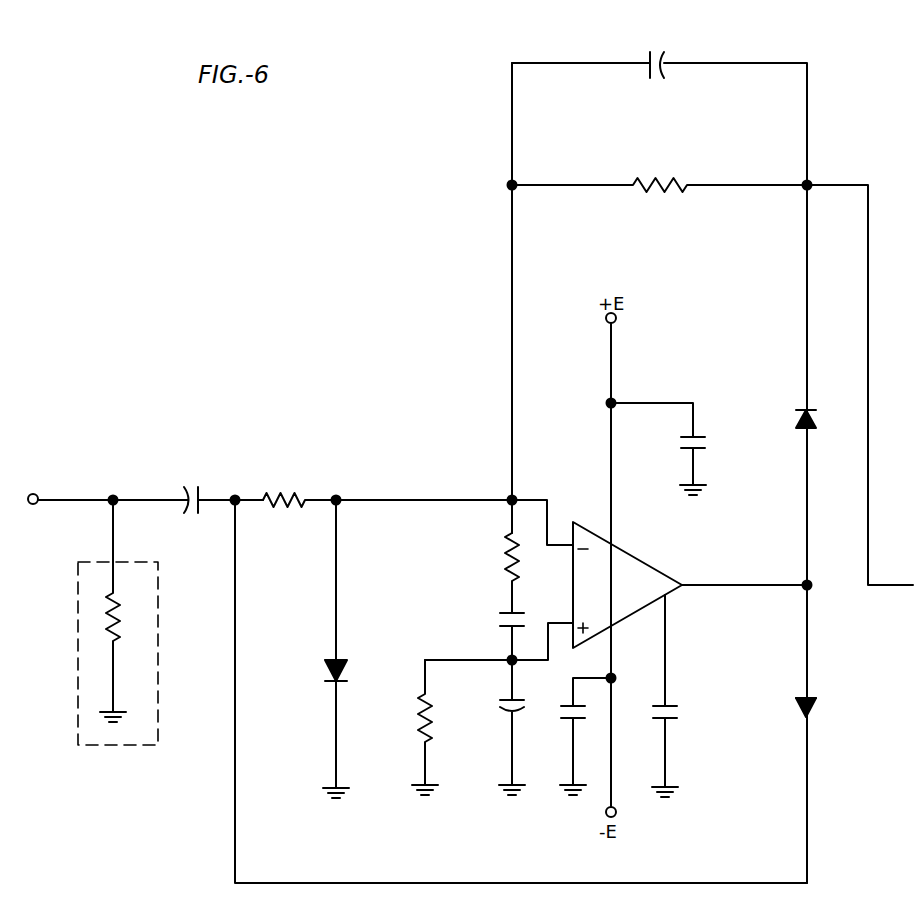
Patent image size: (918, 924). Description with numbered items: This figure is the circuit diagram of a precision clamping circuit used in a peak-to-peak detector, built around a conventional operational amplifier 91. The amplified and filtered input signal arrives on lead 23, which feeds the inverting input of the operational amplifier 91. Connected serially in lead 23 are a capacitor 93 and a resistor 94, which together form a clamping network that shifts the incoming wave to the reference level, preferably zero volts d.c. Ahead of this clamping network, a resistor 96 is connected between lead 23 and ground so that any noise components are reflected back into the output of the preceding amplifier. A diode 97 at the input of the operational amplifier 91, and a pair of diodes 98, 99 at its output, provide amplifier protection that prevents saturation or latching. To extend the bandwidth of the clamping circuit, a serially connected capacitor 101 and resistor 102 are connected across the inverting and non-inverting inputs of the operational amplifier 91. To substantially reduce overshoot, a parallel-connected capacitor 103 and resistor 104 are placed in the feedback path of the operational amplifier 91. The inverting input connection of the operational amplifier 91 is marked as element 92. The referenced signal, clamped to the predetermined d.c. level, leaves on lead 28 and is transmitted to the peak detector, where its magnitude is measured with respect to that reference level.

The lead 23 is at (66, 496).
The capacitor 93 is at (202, 491).
The resistor 94 is at (296, 494).
The resistor 96 is at (118, 618).
The diode 97 is at (334, 658).
The inverting input 92 is at (549, 522).
The operational amplifier 91 is at (650, 566).
The capacitor 101 is at (508, 610).
The resistor 102 is at (507, 550).
The capacitor 103 is at (649, 60).
The resistor 104 is at (674, 181).
The diode 99 is at (801, 408).
The diode 98 is at (811, 697).
The lead 28 is at (893, 588).